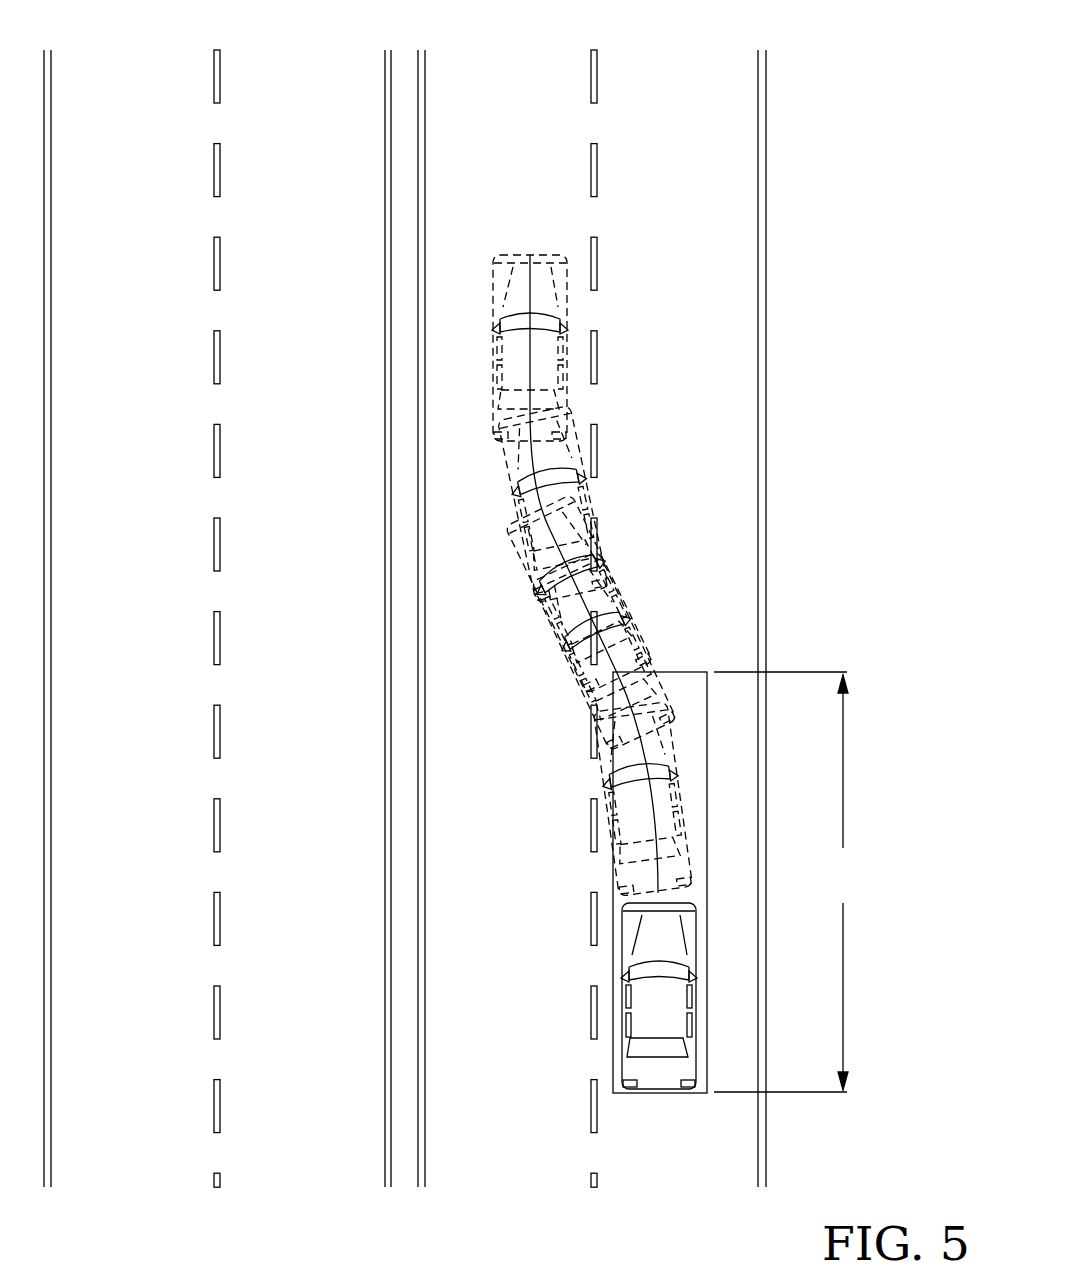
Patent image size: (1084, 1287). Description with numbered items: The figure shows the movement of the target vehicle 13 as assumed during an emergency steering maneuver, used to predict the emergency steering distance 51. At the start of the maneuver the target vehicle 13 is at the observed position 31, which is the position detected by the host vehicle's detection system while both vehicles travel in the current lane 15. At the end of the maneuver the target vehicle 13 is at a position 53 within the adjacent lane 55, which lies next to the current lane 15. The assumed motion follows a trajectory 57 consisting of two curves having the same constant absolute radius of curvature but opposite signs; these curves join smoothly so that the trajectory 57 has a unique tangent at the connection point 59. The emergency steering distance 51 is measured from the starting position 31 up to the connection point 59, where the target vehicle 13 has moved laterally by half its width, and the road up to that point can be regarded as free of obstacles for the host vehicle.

The target vehicle 13 is at (575, 646).
The current lane 15 is at (727, 62).
The observed position 31 is at (650, 1000).
The emergency steering distance 51 is at (850, 864).
The position at end of emergency steering 53 is at (515, 297).
The adjacent lane 55 is at (477, 63).
The trajectory 57 is at (598, 540).
The connection point 59 is at (615, 673).